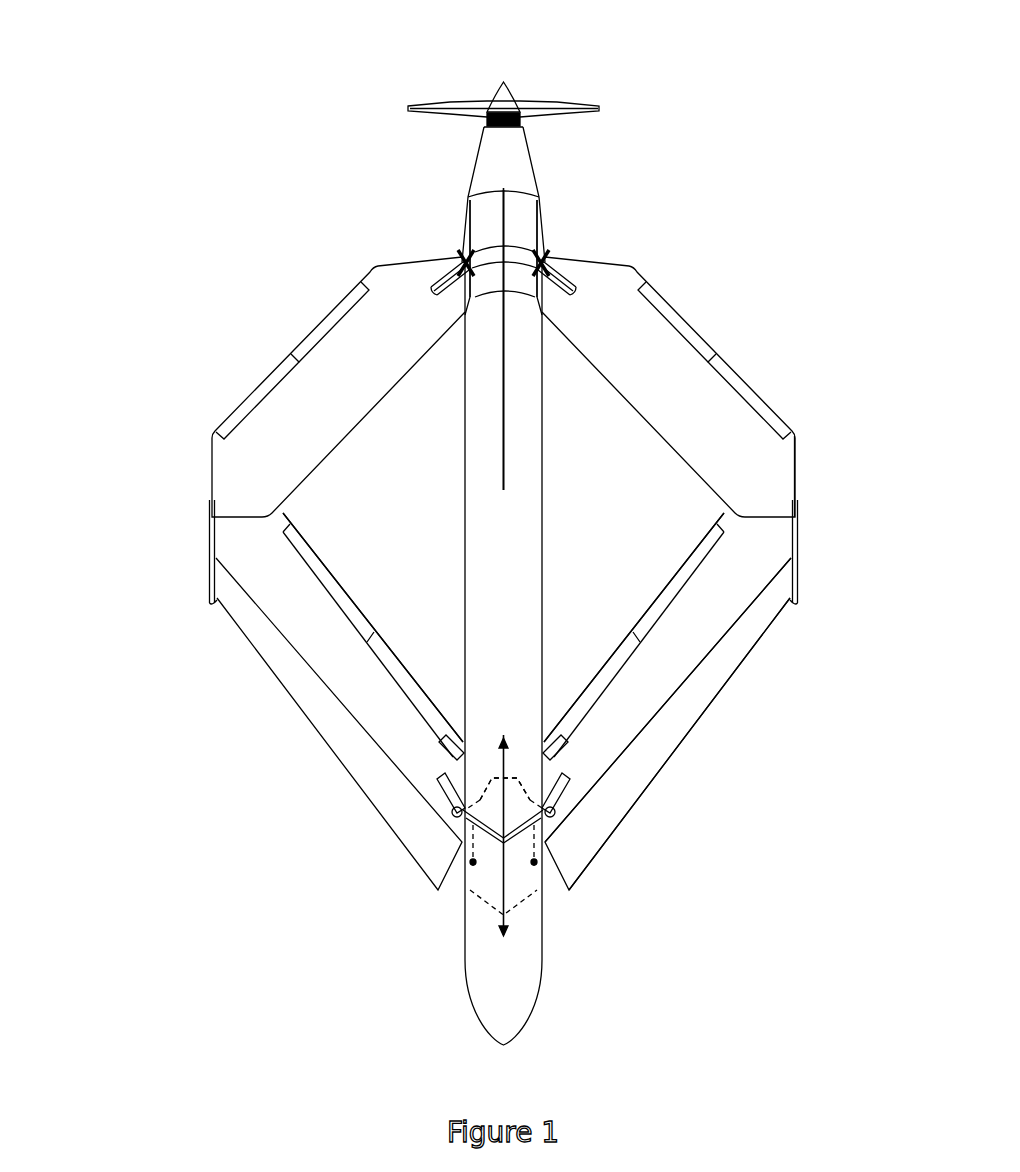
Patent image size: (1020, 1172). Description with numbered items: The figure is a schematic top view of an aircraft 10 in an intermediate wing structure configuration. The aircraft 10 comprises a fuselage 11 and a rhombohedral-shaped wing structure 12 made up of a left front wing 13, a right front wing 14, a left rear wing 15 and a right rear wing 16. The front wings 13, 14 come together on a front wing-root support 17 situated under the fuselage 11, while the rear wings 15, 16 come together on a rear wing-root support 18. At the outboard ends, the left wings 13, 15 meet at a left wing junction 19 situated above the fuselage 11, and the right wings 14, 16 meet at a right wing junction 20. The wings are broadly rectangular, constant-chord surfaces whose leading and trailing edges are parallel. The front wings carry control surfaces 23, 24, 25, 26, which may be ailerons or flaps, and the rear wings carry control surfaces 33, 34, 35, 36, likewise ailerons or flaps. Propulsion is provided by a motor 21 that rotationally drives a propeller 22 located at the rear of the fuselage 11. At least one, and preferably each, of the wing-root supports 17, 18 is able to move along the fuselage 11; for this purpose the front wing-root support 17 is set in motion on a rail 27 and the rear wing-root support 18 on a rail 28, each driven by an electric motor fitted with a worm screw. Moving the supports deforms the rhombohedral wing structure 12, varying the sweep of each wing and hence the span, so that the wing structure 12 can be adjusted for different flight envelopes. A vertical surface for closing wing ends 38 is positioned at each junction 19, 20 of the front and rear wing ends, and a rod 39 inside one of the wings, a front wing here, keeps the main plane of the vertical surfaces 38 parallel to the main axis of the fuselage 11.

The aircraft 10 is at (262, 96).
The fuselage 11 is at (527, 980).
The wing structure 12 is at (149, 405).
The left front wing 13 is at (623, 808).
The right front wing 14 is at (360, 777).
The left rear wing 15 is at (688, 383).
The right rear wing 16 is at (300, 432).
The front wing-root support 17 is at (490, 893).
The rear wing-root support 18 is at (480, 215).
The left wing junction 19 is at (785, 513).
The right wing junction 20 is at (226, 511).
The motor 21 is at (527, 177).
The propeller 22 is at (560, 113).
The control surface 23 is at (680, 585).
The control surface 24 is at (602, 682).
The control surface 25 is at (385, 665).
The control surface 26 is at (333, 585).
The rail 27 is at (507, 870).
The rail 28 is at (504, 452).
The control surface 33 is at (767, 410).
The control surface 34 is at (670, 308).
The control surface 35 is at (362, 292).
The control surface 36 is at (245, 410).
The vertical surface for closing wing ends 38 is at (797, 575).
The rod 39 is at (692, 670).